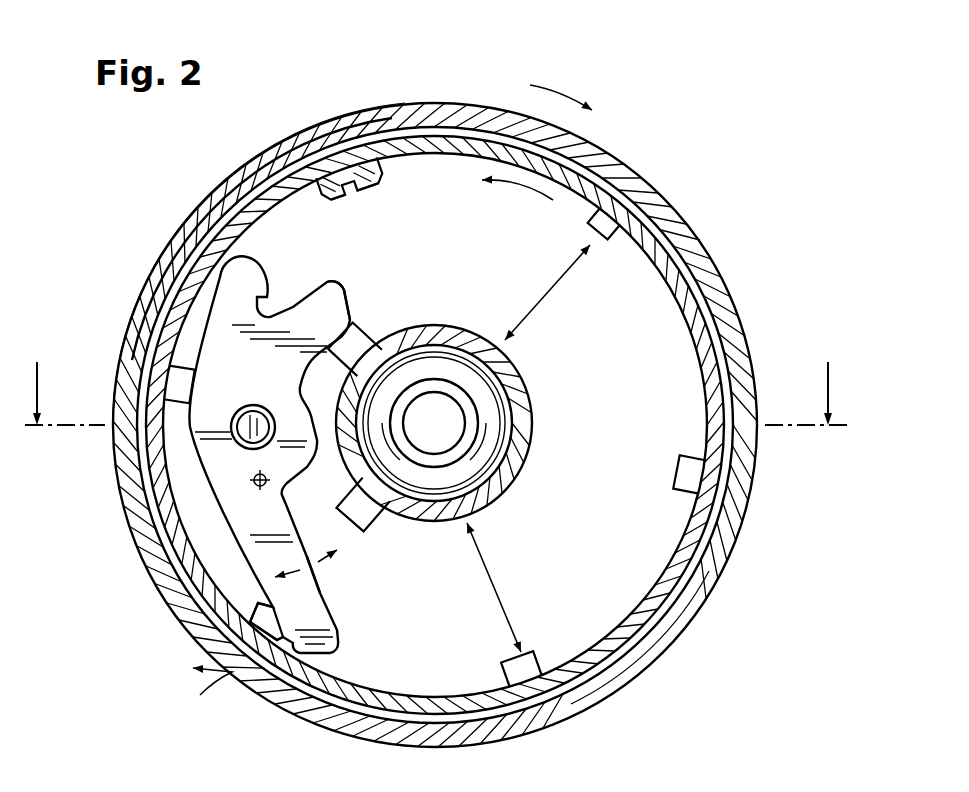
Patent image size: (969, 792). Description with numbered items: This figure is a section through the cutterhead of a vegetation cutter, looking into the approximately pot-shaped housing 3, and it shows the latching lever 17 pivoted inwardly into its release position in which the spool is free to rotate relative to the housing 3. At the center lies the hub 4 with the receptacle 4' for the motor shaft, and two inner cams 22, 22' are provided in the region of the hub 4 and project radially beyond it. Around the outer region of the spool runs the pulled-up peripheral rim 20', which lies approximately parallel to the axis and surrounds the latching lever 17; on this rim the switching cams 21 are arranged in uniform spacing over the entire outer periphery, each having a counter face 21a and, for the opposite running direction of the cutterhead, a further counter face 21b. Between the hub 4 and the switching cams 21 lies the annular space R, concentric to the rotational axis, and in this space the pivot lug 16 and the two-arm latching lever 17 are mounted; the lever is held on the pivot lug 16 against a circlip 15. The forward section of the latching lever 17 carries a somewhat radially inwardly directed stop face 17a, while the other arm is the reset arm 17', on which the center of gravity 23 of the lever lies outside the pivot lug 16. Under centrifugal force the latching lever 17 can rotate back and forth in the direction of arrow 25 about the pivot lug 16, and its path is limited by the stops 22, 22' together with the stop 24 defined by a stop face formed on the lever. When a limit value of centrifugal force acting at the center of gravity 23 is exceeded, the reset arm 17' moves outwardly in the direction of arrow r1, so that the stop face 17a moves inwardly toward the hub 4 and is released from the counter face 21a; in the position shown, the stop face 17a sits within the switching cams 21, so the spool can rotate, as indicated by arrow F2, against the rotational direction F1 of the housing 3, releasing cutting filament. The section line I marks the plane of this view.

The housing 3 is at (652, 176).
The peripheral rim 20' is at (464, 425).
The switching cam 21 is at (340, 152).
The counter face 21a is at (303, 168).
The counter face 21b is at (365, 160).
The latching lever 17 is at (246, 385).
The stop face 17a is at (210, 240).
The reset arm 17' is at (191, 605).
The pivot lug 16 is at (231, 424).
The circlip 15 is at (238, 452).
The center of gravity 23 is at (252, 485).
The stop 24 is at (348, 318).
The arrow 25 is at (322, 585).
The hub 4 is at (465, 423).
The receptacle for the motor shaft 4' is at (473, 424).
The inner cam 22 is at (385, 335).
The inner cam 22' is at (385, 528).
The section line I- I is at (435, 393).
The rotational direction F1 is at (552, 83).
The arrow F2 is at (517, 214).
The annular space R is at (528, 448).
The arrow r1 is at (207, 695).